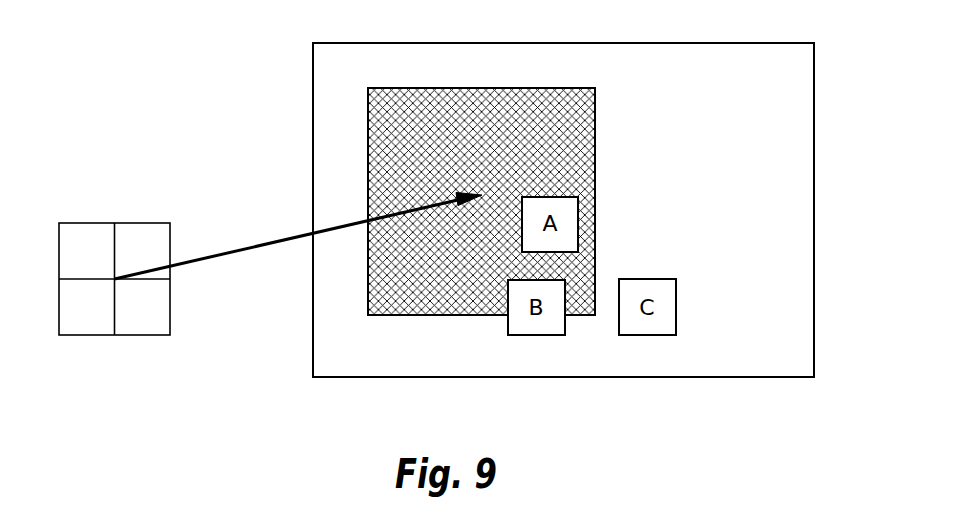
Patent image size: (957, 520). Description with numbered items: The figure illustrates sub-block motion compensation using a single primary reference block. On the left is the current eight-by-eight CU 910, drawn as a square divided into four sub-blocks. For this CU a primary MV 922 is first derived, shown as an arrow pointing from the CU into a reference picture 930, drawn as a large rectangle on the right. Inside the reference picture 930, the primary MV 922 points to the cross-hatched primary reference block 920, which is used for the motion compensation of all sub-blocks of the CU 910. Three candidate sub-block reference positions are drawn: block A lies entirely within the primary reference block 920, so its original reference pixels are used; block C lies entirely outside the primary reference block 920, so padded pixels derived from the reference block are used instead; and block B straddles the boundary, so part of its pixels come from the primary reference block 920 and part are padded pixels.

The 8×8 CU 910 is at (88, 223).
The primary reference block 920 is at (480, 88).
The primary MV 922 is at (287, 241).
The reference picture 930 is at (592, 43).